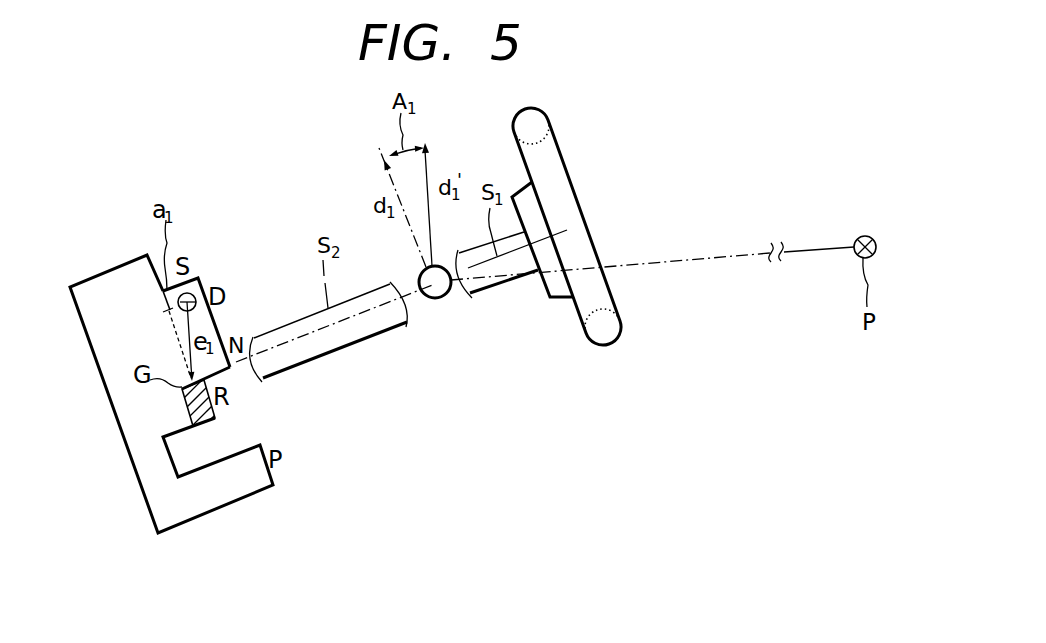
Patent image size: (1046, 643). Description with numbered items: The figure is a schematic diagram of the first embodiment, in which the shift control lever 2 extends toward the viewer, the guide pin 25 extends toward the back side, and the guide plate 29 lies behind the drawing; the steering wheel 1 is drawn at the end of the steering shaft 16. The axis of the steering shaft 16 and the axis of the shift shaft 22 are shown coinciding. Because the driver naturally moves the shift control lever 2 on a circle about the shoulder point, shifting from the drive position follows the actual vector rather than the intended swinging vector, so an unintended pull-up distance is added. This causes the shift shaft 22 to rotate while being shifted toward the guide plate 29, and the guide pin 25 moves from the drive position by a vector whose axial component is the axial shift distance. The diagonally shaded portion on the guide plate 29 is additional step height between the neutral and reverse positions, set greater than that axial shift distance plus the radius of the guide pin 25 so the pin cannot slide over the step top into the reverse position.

The steering wheel 1 is at (557, 152).
The shift control lever 2 is at (437, 299).
The steering shaft 16 is at (494, 287).
The shift shaft 22 is at (338, 337).
The guide pin 25 is at (200, 282).
The guide plate 29 is at (115, 415).